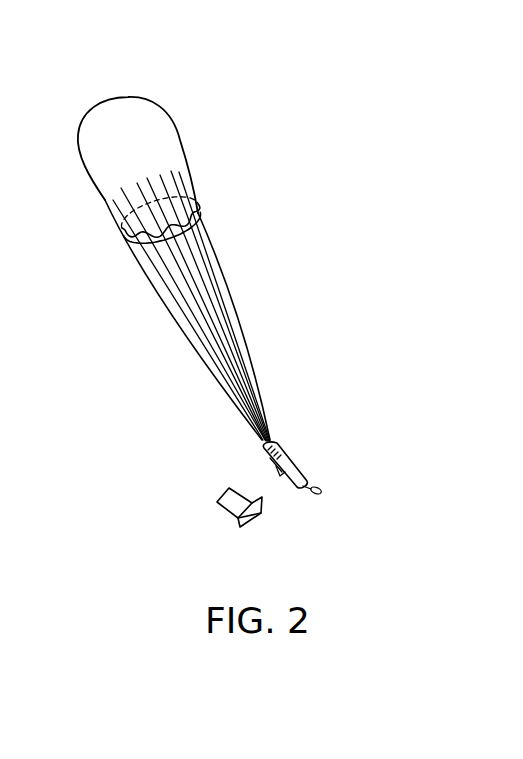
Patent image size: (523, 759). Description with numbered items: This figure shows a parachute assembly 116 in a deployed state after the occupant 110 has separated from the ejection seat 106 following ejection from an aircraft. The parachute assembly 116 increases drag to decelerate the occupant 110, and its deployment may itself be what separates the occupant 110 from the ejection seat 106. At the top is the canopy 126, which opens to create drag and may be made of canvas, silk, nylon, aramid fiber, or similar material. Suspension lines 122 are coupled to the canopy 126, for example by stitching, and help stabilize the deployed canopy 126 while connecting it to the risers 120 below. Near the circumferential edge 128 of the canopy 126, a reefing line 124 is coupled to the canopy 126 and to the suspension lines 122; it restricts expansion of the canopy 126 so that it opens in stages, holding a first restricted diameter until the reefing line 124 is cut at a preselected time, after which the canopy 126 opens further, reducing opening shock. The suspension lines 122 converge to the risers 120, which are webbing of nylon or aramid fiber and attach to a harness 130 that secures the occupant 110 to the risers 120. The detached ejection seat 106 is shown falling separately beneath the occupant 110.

The ejection seat 106 is at (232, 505).
The occupant 110 is at (262, 448).
The parachute assembly 116 is at (100, 90).
The risers 120 is at (267, 411).
The suspension lines 122 is at (222, 265).
The reefing line 124 is at (143, 262).
The canopy 126 is at (139, 150).
The circumferential edge 128 is at (183, 198).
The harness 130 is at (279, 442).